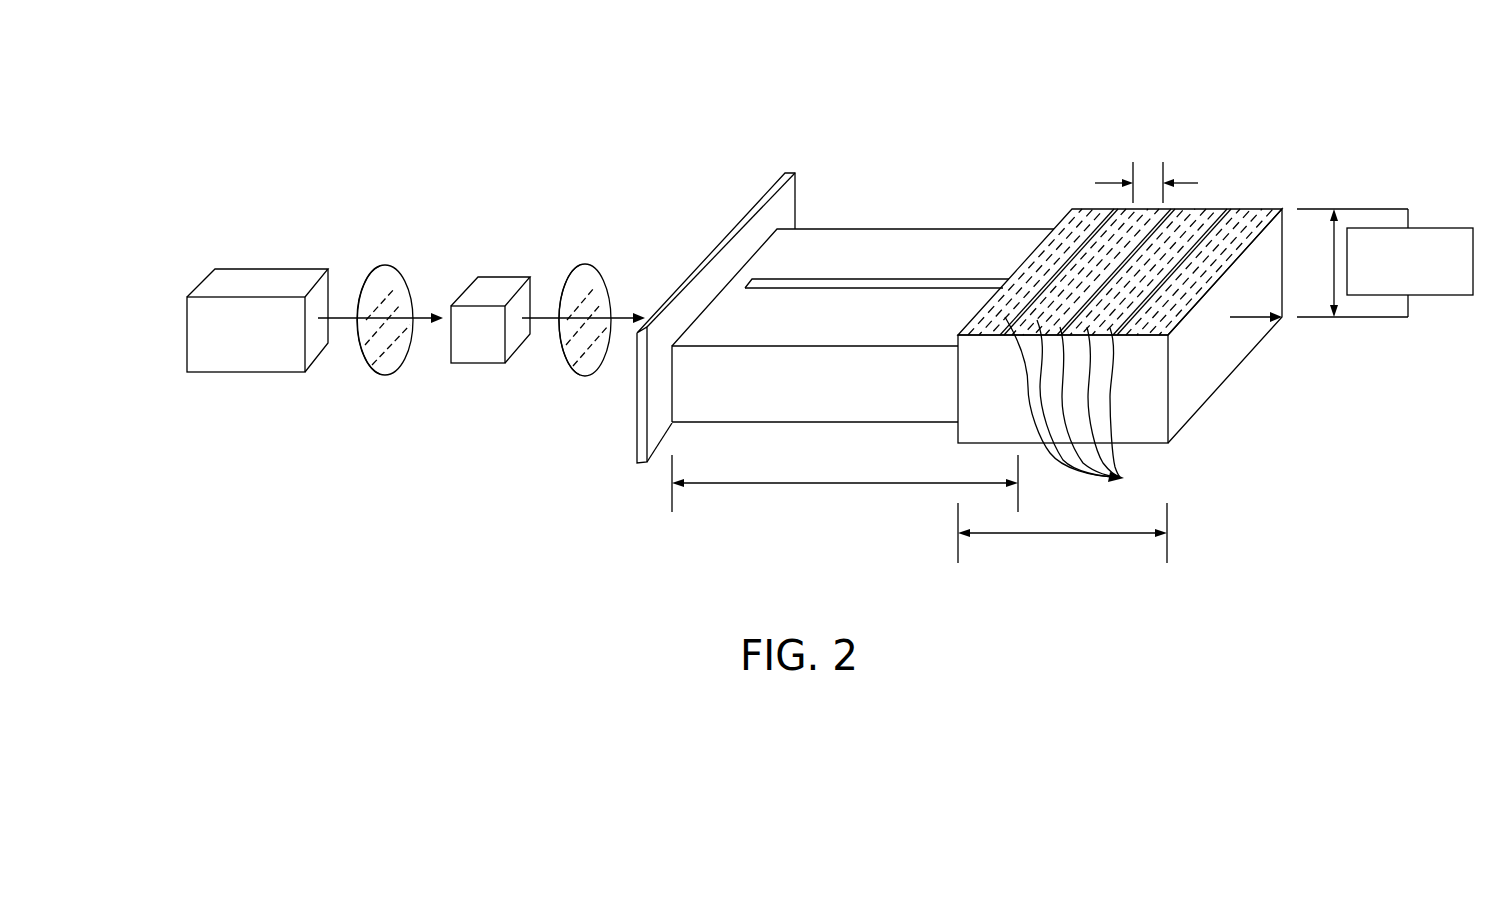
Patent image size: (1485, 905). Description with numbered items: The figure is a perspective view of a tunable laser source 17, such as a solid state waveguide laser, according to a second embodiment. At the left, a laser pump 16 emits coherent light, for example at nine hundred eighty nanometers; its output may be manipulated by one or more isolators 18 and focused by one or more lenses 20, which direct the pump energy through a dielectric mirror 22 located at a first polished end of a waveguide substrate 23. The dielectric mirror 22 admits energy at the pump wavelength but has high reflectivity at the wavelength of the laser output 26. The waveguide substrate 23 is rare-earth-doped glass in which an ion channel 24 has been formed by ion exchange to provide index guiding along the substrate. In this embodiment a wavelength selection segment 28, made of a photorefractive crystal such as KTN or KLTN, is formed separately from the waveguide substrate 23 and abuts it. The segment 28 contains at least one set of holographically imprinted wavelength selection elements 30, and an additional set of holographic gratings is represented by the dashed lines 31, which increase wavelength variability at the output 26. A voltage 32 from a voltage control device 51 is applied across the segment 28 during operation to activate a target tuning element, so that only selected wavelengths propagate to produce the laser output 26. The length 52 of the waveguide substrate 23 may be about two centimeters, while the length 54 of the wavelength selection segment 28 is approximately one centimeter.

The laser pump 16 is at (225, 277).
The tunable laser source 17 is at (1198, 62).
The isolator 18 is at (467, 288).
The lens 20 is at (373, 266).
The dielectric mirror 22 is at (768, 196).
The waveguide substrate 23 is at (817, 238).
The ion channel 24 is at (878, 279).
The laser output 26 is at (1258, 318).
The wavelength selection segment 28 is at (1198, 390).
The wavelength selection elements 30 is at (1078, 403).
The additional set of holographic gratings 31 is at (1262, 217).
The voltage 32 is at (1342, 231).
The voltage control device 51 is at (1422, 291).
The length of the waveguide substrate 52 is at (850, 483).
The length of the wavelength selection segment 54 is at (1068, 533).